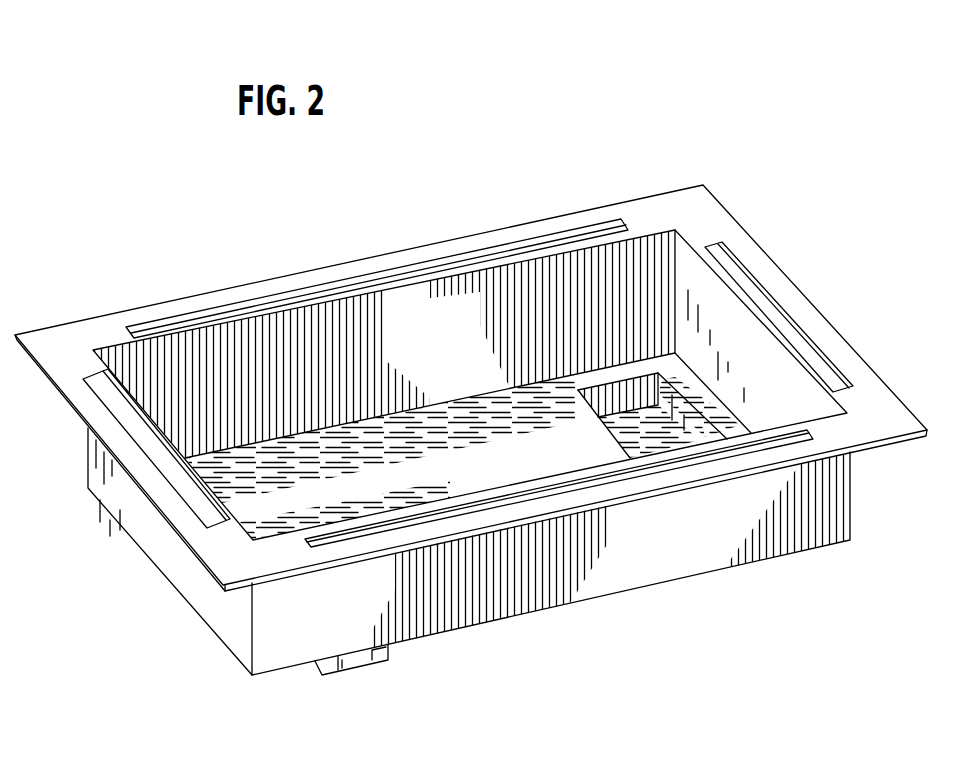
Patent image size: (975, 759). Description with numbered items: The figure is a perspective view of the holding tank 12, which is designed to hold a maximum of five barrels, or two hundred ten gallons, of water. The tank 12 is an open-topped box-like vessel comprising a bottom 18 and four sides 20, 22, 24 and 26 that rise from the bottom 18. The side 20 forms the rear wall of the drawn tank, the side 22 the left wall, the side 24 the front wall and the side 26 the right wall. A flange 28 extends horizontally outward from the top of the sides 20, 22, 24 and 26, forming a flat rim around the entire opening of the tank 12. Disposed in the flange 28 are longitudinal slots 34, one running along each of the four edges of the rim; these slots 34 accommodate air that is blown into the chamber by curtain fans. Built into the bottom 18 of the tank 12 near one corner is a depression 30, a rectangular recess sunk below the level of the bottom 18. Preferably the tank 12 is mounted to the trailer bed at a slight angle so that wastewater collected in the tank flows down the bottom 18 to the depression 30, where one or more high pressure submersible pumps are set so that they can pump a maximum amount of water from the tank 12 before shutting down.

The holding tank 12 is at (471, 401).
The bottom 18 is at (408, 463).
The side 20 is at (448, 308).
The side 22 is at (140, 513).
The side 24 is at (645, 553).
The side 26 is at (743, 343).
The flange 28 is at (68, 337).
The depression 30 is at (667, 437).
The longitudinal slots 34 is at (110, 397).